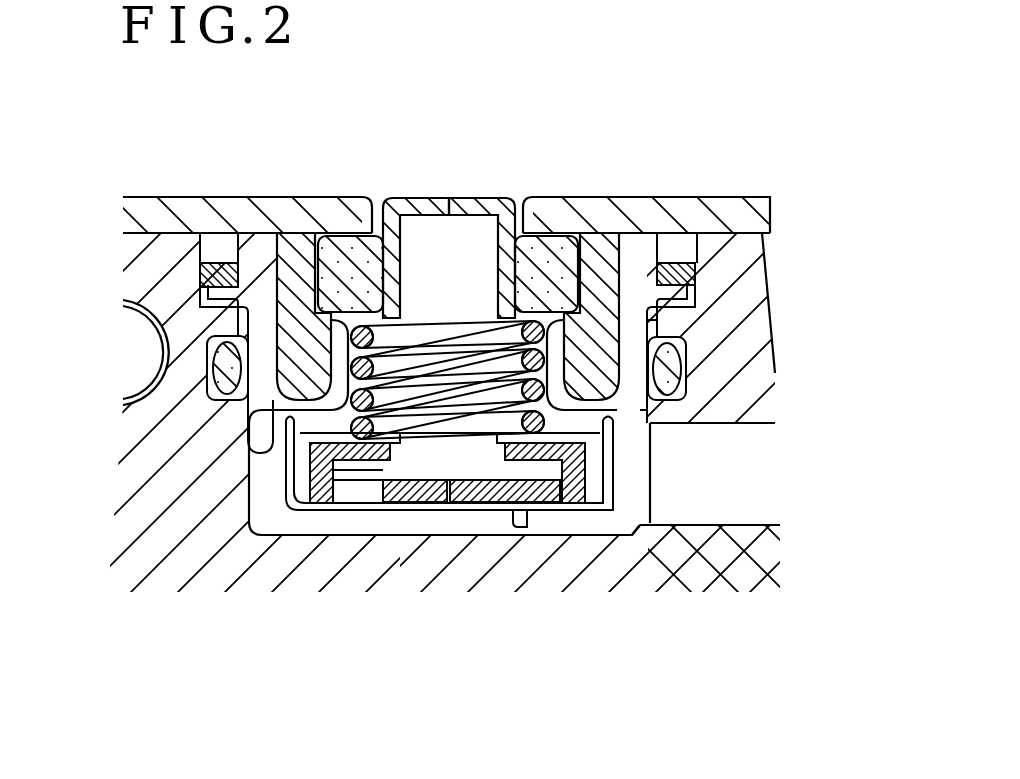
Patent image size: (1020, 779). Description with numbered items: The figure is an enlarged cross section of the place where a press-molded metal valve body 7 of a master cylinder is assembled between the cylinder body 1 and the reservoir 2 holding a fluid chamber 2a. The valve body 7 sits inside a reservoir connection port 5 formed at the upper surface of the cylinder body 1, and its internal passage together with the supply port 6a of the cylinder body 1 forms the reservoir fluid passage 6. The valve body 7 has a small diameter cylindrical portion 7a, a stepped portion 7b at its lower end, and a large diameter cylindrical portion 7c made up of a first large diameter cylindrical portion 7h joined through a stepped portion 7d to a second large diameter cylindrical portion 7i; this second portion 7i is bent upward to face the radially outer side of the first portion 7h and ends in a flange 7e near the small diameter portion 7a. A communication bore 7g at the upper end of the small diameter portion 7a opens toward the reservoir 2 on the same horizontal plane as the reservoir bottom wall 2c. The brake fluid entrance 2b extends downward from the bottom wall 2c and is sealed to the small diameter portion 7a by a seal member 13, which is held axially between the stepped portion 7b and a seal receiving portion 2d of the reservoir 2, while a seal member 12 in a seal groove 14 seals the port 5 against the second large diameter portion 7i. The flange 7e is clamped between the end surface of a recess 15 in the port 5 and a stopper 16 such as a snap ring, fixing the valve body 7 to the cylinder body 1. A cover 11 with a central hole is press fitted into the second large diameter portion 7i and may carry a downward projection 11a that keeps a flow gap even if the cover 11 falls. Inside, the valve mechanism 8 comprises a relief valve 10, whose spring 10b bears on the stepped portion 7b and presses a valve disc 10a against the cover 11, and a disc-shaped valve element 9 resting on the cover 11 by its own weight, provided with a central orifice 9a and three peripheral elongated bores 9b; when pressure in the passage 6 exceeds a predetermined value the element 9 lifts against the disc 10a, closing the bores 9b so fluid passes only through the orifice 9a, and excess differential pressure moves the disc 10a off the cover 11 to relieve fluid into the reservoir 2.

The cylinder body 1 is at (152, 275).
The reservoir 2 is at (123, 218).
The fluid chamber 2a is at (449, 165).
The brake fluid entrance 2b is at (300, 330).
The bottom wall 2c is at (232, 230).
The seal receiving portion 2d is at (336, 236).
The reservoir connection port 5 is at (283, 517).
The reservoir fluid passage 6 is at (759, 515).
The supply port 6a is at (745, 470).
The valve body 7 is at (490, 197).
The small diameter cylindrical portion 7a is at (378, 197).
The stepped portion 7b is at (667, 293).
The large diameter cylindrical portion 7c is at (795, 676).
The stepped portion 7d is at (240, 400).
The flange 7e is at (702, 250).
The communication bore 7g is at (467, 196).
The first large diameter cylindrical portion 7h is at (645, 528).
The second large diameter cylindrical portion 7i is at (707, 528).
The valve mechanism 8 is at (385, 510).
The valve element 9 is at (413, 510).
The orifice 9a is at (447, 510).
The elongated bores 9b is at (360, 510).
The relief valve 10 is at (570, 676).
The valve disc 10a is at (517, 510).
The spring 10b is at (468, 510).
The cover 11 is at (296, 510).
The projection 11a is at (535, 527).
The seal member 12 is at (683, 372).
The seal member 13 is at (545, 236).
The seal groove 14 is at (690, 410).
The recess 15 is at (692, 320).
The stopper 16 is at (697, 268).